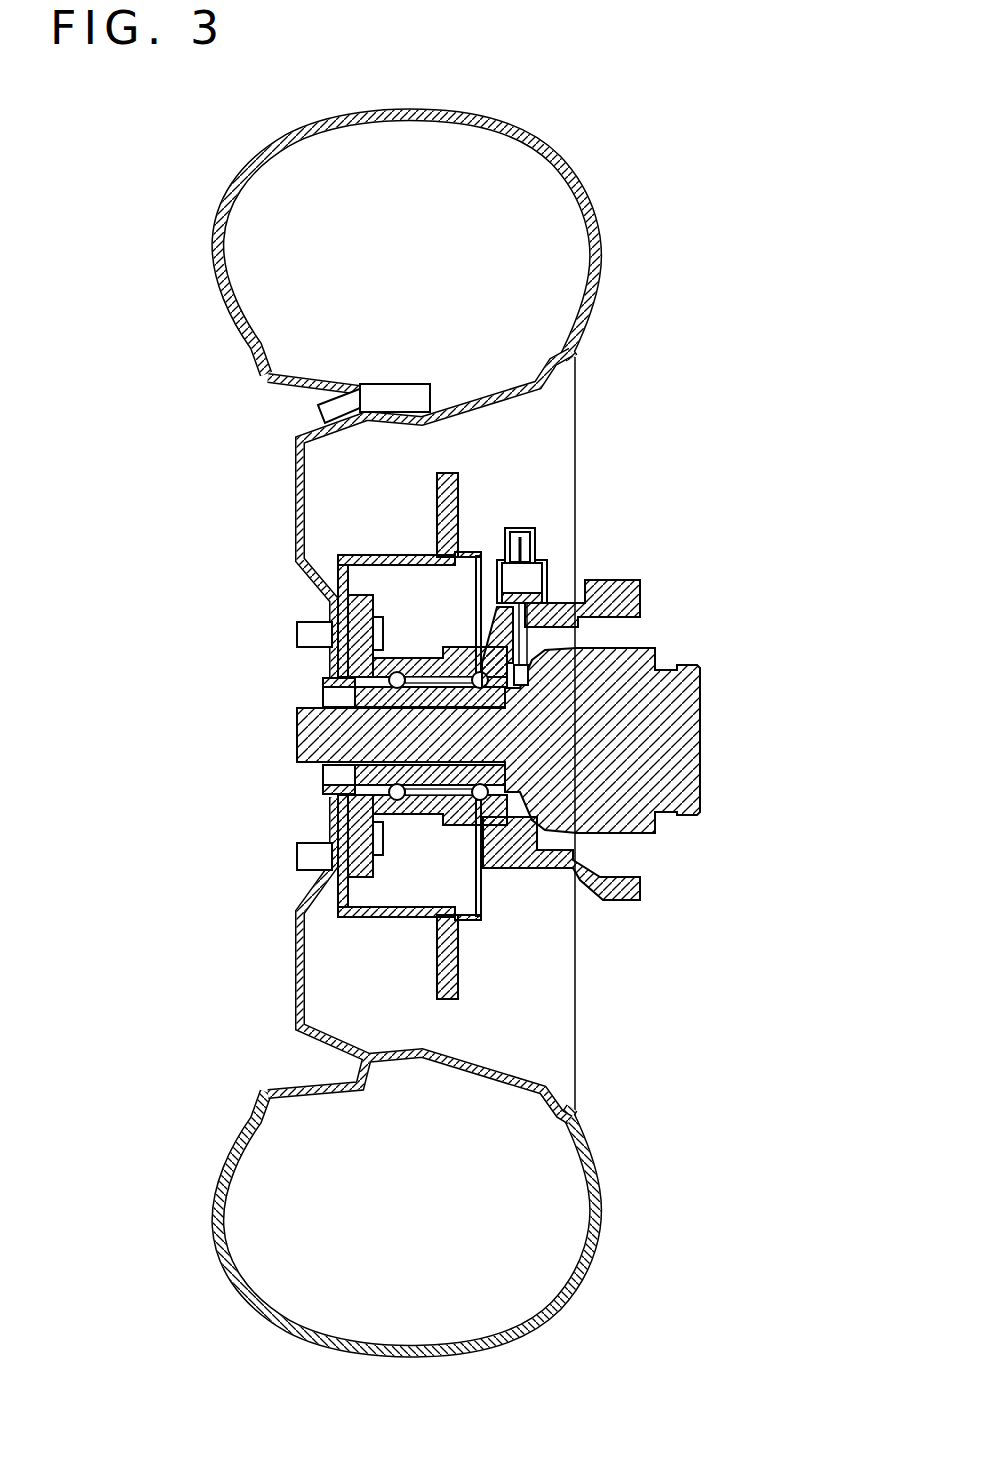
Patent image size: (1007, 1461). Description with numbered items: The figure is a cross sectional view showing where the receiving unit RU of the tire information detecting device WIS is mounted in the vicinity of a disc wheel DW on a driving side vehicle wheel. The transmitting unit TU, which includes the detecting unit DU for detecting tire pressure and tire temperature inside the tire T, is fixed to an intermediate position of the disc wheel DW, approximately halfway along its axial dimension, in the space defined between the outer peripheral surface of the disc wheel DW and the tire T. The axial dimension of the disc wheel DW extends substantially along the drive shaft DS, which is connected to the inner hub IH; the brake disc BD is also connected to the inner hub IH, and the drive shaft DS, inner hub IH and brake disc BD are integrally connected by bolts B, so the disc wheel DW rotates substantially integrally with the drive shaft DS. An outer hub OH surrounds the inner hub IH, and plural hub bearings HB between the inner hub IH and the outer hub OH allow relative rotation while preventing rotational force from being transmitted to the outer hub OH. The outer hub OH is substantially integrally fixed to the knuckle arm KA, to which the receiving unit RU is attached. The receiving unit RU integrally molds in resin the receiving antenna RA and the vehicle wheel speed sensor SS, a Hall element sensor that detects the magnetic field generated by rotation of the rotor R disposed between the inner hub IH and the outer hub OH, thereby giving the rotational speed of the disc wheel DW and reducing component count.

The tire T is at (603, 221).
The transmitting unit TU is at (437, 733).
The detecting unit DU is at (418, 400).
The disc wheel DW is at (263, 382).
The tire information detecting device WIS is at (622, 393).
The outer hub OH is at (418, 663).
The inner hub IH is at (358, 600).
The bolts B is at (303, 637).
The receiving unit RU is at (548, 539).
The receiving antenna RA is at (582, 603).
The knuckle arm KA is at (625, 582).
The vehicle wheel speed sensor SS is at (525, 672).
The drive shaft DS is at (680, 750).
The rotor R is at (513, 808).
The hub bearings HB is at (395, 803).
The brake disc BD is at (437, 950).